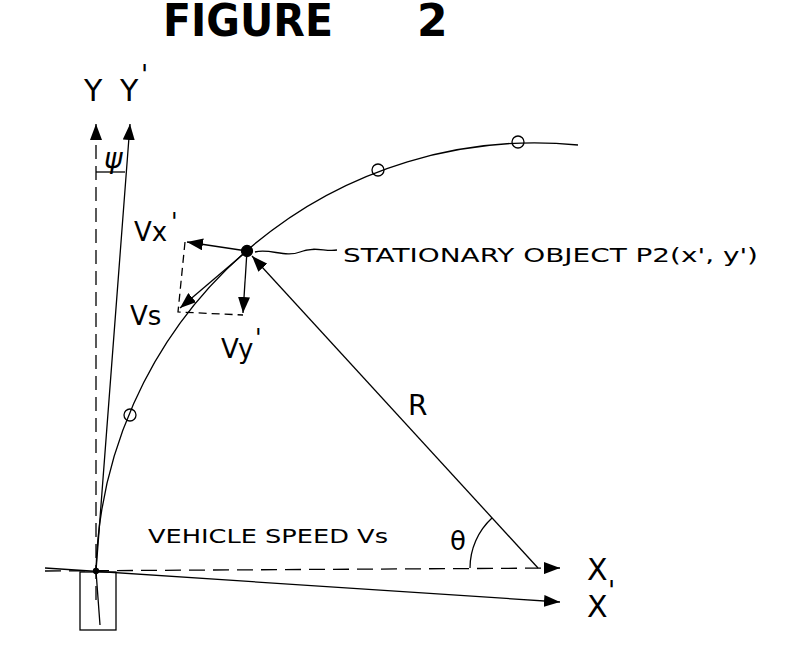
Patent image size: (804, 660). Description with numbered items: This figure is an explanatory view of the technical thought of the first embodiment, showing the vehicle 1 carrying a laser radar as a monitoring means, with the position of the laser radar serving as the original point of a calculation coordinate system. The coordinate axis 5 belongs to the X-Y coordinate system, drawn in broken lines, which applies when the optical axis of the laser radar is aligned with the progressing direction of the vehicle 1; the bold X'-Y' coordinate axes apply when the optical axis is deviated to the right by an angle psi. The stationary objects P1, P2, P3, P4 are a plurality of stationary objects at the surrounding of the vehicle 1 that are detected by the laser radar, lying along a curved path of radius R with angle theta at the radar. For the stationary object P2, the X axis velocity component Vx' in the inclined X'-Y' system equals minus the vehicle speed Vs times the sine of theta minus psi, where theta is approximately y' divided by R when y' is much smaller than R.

The vehicle 1 is at (80, 605).
The coordinate axis 5 is at (96, 571).
The stationary object P1 is at (150, 429).
The stationary object P2 is at (264, 197).
The stationary object P3 is at (363, 151).
The stationary object P4 is at (507, 124).